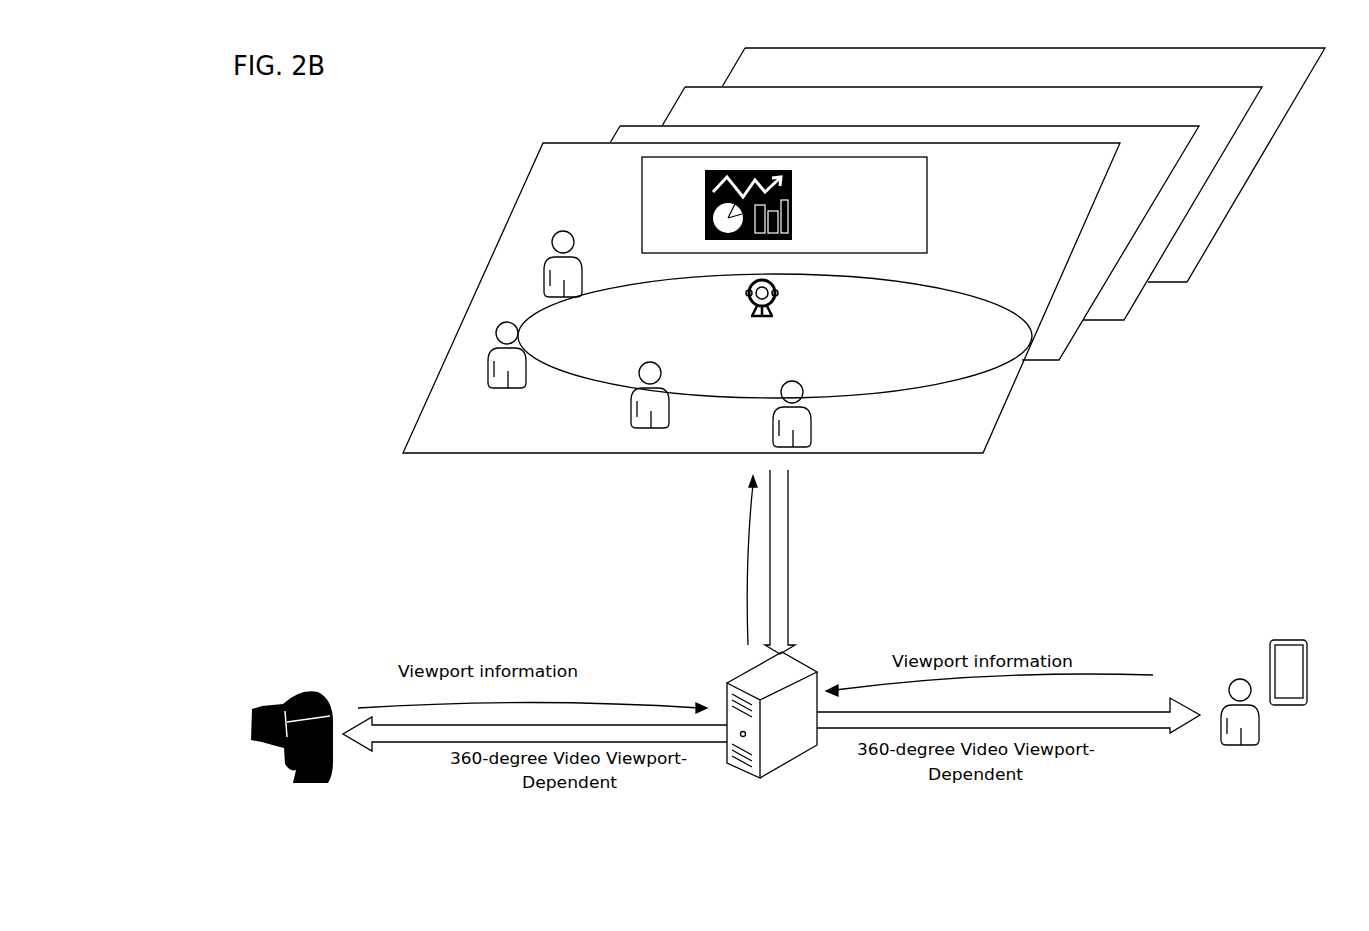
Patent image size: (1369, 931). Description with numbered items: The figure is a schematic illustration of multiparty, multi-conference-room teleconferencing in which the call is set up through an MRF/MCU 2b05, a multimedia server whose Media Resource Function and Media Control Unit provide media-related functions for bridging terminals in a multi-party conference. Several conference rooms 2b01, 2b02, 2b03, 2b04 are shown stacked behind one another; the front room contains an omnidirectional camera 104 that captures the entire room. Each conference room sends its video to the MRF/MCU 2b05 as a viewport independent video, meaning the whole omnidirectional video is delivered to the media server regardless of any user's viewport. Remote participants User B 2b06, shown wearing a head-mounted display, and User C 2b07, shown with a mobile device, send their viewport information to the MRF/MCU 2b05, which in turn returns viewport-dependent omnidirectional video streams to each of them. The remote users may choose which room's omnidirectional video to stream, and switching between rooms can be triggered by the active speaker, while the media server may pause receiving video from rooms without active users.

The conference room 2b01 is at (749, 298).
The conference room 2b02 is at (610, 128).
The conference room 2b03 is at (680, 90).
The conference room 2b04 is at (752, 70).
The MRF/MCU 2b05 is at (740, 677).
The User B 2b06 is at (249, 707).
The User C 2b07 is at (1267, 642).
The omnidirectional/360-degree camera 104 is at (778, 305).